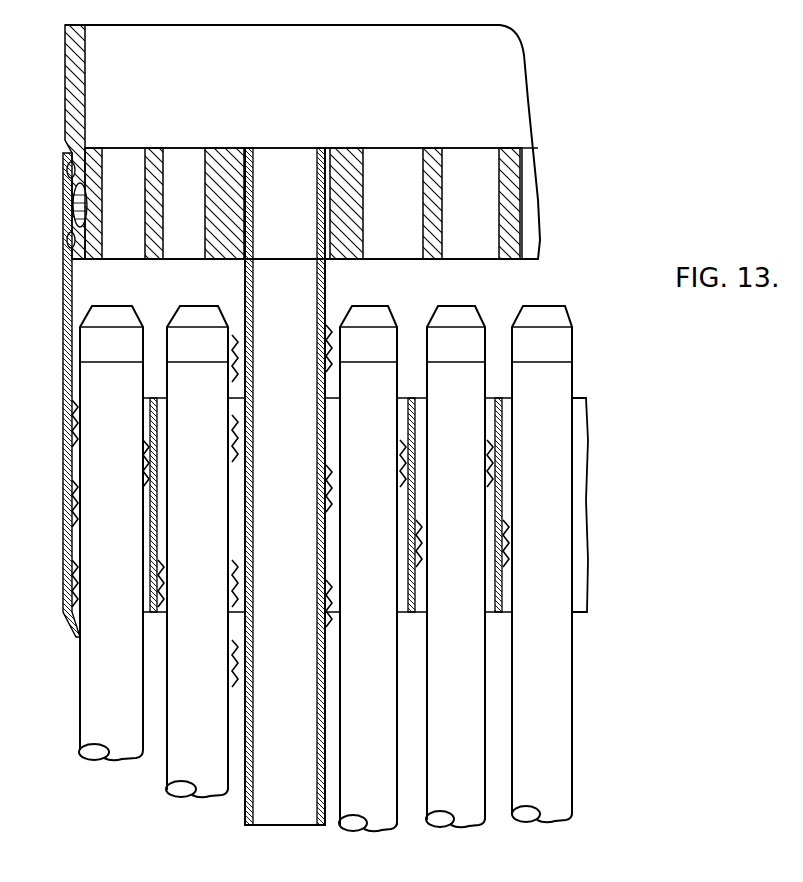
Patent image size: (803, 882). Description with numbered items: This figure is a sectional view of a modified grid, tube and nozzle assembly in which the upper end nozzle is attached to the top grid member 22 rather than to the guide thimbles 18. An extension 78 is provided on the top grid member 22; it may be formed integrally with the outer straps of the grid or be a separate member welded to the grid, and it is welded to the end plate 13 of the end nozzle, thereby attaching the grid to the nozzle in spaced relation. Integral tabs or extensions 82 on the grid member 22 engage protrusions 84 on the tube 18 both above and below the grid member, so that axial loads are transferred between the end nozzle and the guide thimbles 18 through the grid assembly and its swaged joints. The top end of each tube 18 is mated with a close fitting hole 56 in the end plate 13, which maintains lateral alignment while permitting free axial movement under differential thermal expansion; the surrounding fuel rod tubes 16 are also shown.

The end plate 13 is at (510, 195).
The close fitting hole 56 is at (395, 148).
The extension 78 is at (63, 307).
The tubes 16 is at (173, 760).
The guide thimble 18 is at (297, 807).
The integral tabs 82 is at (327, 387).
The protrusions 84 is at (323, 342).
The top grid member 22 is at (588, 517).